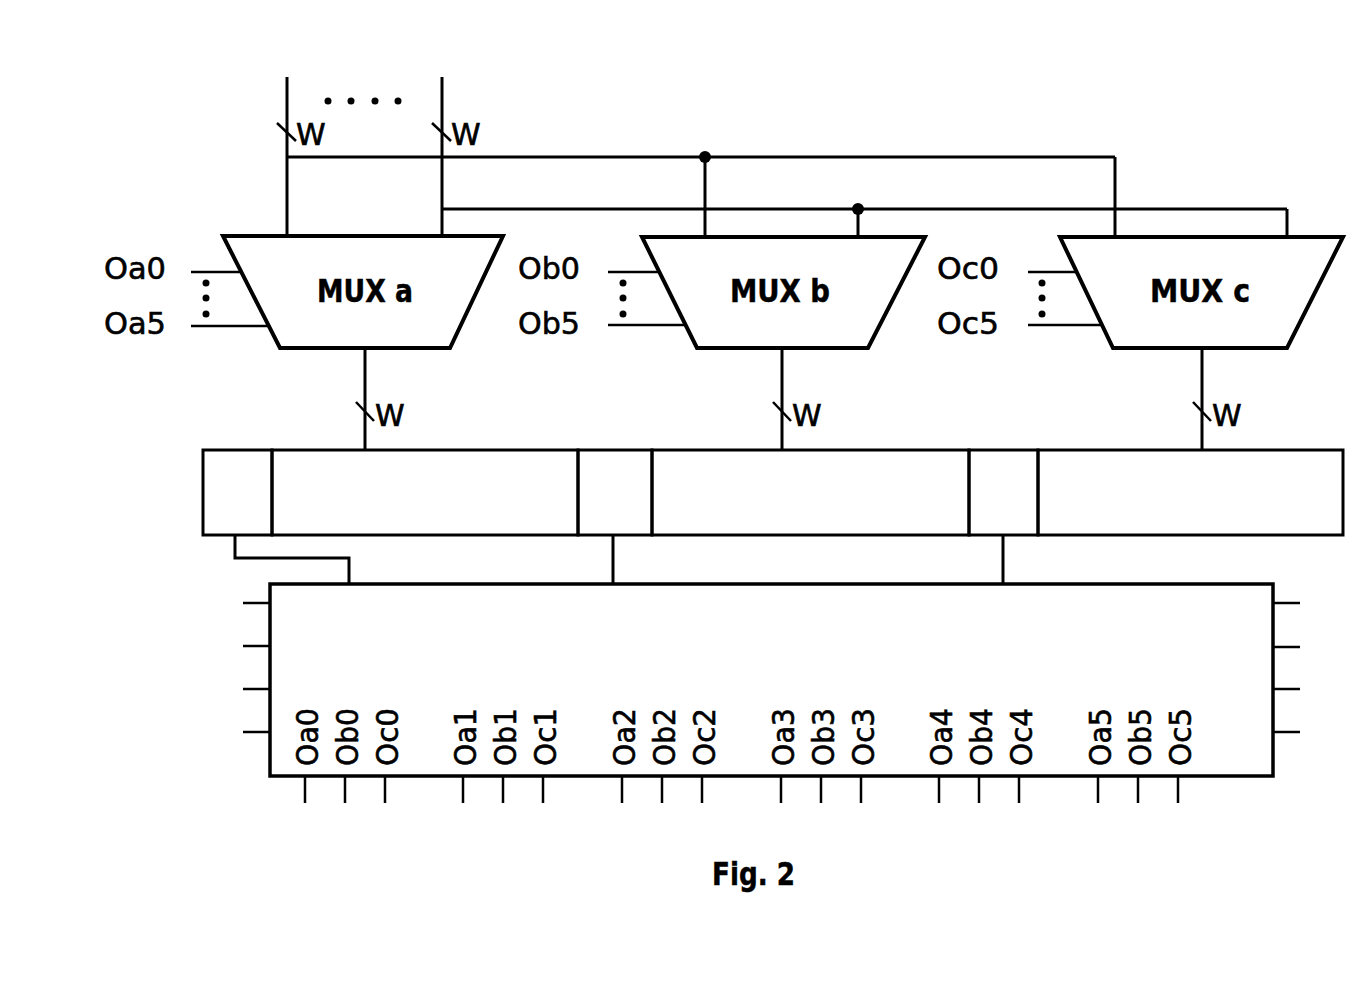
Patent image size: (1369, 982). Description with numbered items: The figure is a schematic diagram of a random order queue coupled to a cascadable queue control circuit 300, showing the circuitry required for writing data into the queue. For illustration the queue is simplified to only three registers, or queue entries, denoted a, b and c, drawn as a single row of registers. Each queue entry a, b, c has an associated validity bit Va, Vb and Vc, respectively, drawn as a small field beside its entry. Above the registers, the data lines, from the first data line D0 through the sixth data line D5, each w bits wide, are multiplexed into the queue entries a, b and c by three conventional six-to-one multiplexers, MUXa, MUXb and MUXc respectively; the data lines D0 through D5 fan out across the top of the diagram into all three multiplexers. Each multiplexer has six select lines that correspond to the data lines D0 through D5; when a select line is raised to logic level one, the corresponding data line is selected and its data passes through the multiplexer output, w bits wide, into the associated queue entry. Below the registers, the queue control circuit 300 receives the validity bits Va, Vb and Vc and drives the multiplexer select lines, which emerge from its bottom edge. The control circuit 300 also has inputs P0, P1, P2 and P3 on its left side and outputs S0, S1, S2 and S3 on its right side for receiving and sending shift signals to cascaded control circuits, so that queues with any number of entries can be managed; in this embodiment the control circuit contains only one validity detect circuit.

The queue control circuit 300 is at (1030, 628).
The data line D0 is at (296, 135).
The data line D5 is at (450, 135).
The validity bit Va is at (237, 492).
The validity bit Vb is at (615, 492).
The validity bit Vc is at (1003, 492).
The queue entry a is at (425, 492).
The queue entry b is at (810, 492).
The queue entry c is at (1190, 492).
The input P0 is at (237, 601).
The input P1 is at (237, 644).
The input P2 is at (237, 687).
The input P3 is at (237, 730).
The output S0 is at (1308, 605).
The output S1 is at (1308, 649).
The output S2 is at (1308, 691).
The output S3 is at (1308, 734).